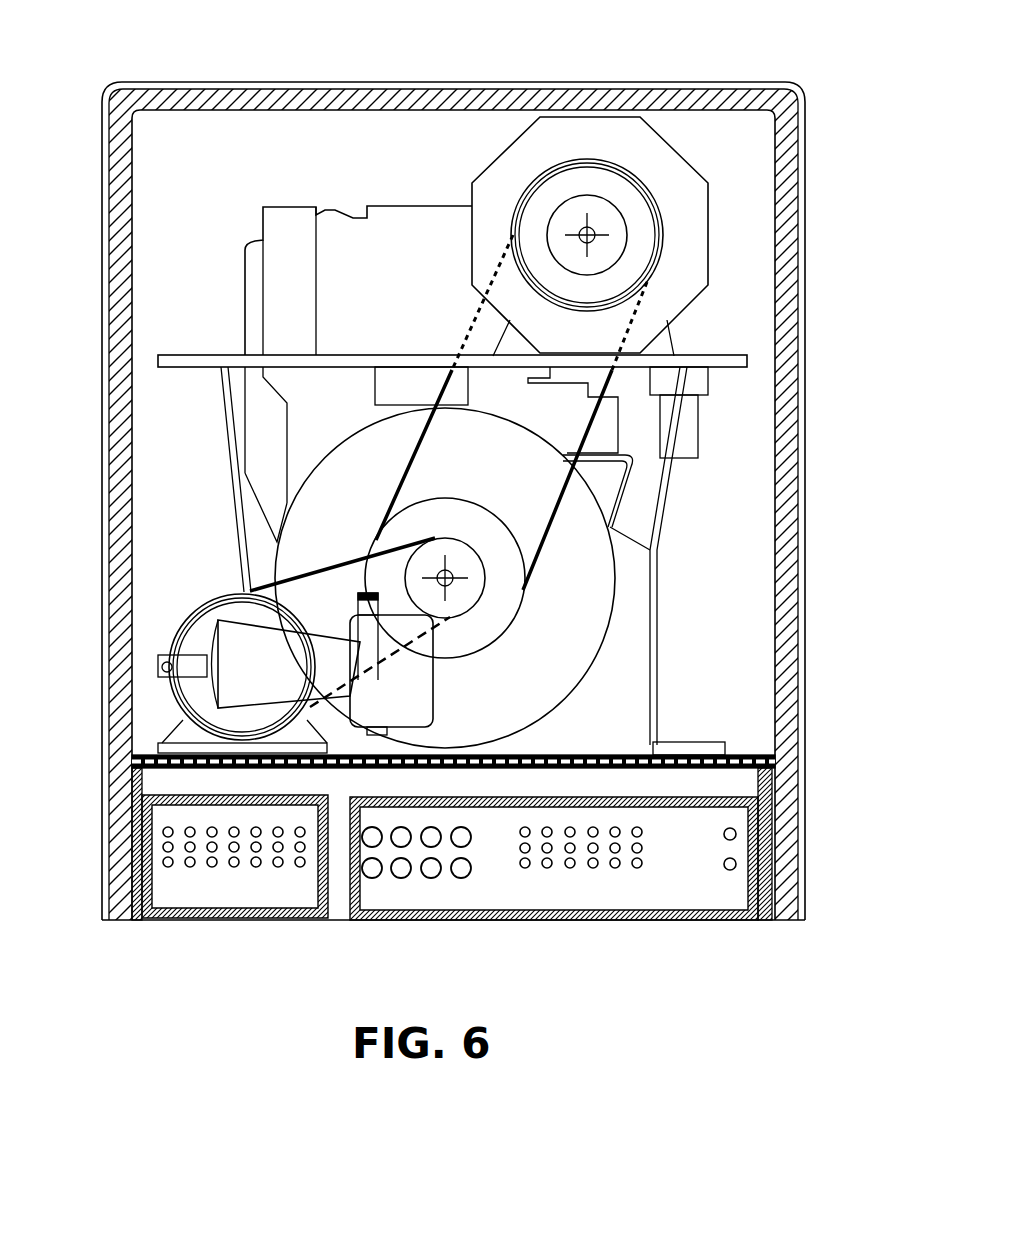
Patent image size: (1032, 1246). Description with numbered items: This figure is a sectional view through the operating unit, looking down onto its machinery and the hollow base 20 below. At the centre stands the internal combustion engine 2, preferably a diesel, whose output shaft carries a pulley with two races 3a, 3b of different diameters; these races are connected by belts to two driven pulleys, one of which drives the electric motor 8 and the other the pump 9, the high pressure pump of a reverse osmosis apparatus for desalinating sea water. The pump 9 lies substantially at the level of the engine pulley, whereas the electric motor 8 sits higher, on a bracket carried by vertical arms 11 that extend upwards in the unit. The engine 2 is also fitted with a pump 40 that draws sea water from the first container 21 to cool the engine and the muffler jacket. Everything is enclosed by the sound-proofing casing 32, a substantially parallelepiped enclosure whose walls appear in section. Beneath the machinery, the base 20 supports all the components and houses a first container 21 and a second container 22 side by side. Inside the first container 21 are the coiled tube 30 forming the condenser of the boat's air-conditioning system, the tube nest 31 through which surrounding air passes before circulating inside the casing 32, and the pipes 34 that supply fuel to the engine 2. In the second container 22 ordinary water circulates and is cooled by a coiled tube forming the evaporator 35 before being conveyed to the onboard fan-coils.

The internal combustion engine 2 is at (386, 304).
The race 3a is at (443, 518).
The race 3b is at (463, 590).
The electric motor 8 is at (685, 195).
The pump 9 is at (262, 676).
The vertical arms 11 is at (240, 537).
The base 20 is at (130, 868).
The first container 21 is at (562, 920).
The second container 22 is at (280, 920).
The coiled tube 30 is at (631, 886).
The tube nest 31 is at (444, 886).
The sound-proofing casing 32 is at (707, 90).
The pipes 34 is at (736, 836).
The evaporator 35 is at (190, 884).
The pump 40 is at (400, 390).